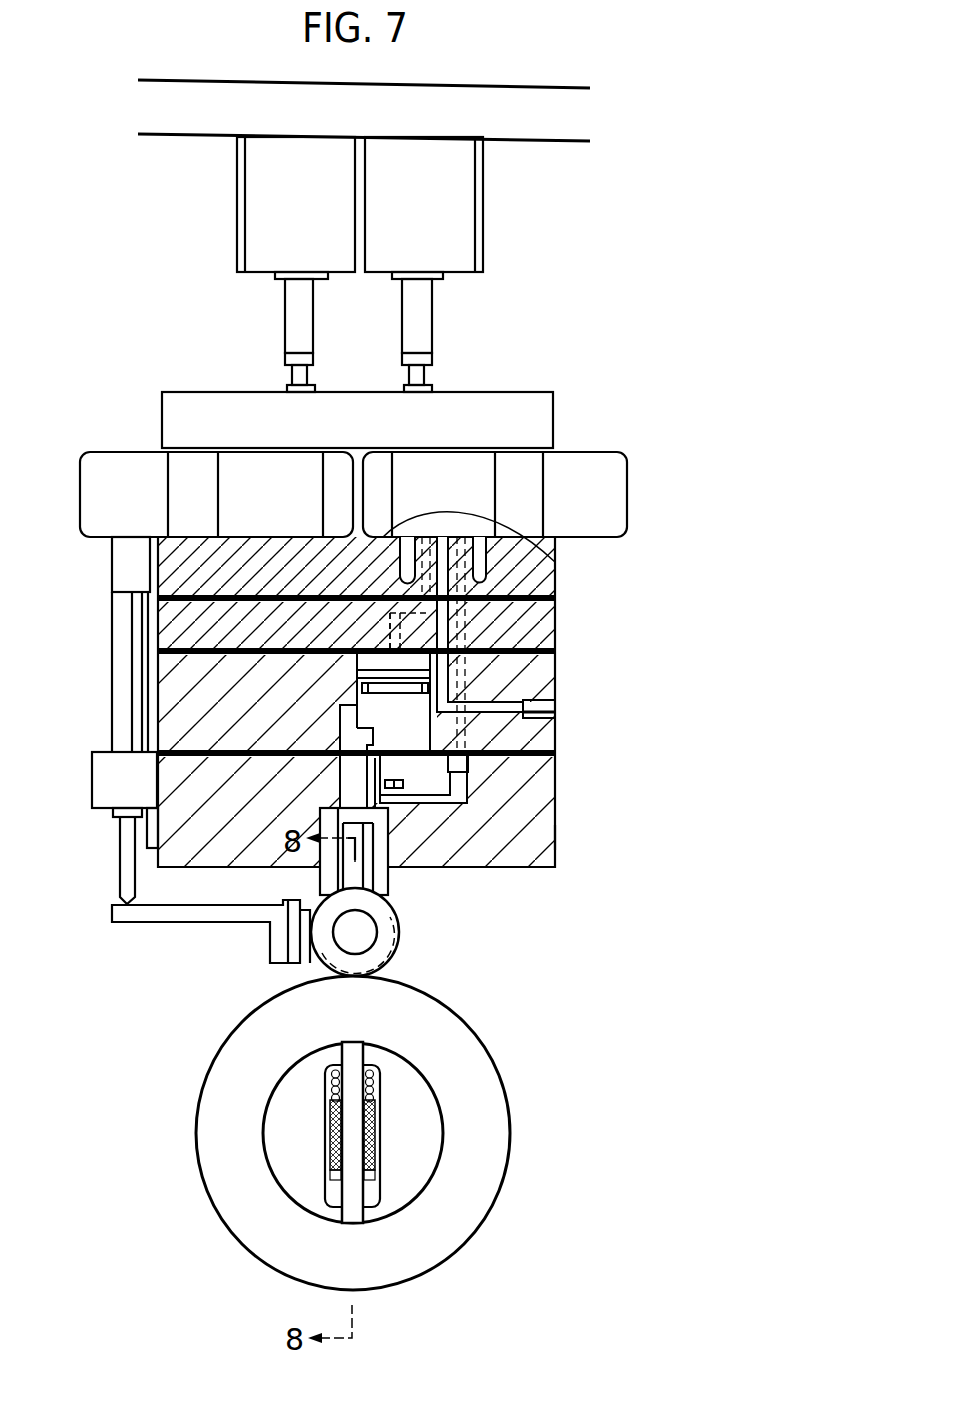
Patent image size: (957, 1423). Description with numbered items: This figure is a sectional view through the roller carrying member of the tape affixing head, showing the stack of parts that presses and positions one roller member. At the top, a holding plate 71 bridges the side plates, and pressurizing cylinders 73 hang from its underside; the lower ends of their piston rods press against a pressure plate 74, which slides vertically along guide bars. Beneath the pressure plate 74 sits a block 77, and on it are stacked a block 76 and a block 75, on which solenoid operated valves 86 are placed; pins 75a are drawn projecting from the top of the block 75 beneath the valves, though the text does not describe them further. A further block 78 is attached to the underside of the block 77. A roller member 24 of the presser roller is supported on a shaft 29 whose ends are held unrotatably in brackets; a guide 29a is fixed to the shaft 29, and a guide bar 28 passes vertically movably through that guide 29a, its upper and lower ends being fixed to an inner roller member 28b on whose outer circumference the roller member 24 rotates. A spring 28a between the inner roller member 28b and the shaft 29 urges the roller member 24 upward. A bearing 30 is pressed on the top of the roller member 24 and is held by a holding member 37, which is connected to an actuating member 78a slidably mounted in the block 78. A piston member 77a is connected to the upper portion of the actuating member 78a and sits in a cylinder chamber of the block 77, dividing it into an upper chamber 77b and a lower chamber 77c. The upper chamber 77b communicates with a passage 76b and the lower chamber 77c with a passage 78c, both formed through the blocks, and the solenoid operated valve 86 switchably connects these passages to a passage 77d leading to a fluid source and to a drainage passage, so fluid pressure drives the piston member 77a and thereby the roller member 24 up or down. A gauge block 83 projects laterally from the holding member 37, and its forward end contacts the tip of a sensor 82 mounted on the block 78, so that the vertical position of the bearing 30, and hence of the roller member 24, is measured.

The holding plate 71 is at (549, 128).
The pressurizing cylinders 73 is at (265, 229).
The pressure plate 74 is at (545, 428).
The solenoid operated valves 86 is at (116, 472).
The sensor 82 is at (128, 697).
The gauge block 83 is at (100, 914).
The block 75 is at (568, 592).
The pin 75a is at (478, 553).
The block 76 is at (570, 638).
The passage 76b is at (396, 607).
The block 77 is at (570, 674).
The piston member 77a is at (345, 674).
The upper chamber 77b is at (380, 624).
The lower chamber 77c is at (393, 801).
The passage 77d is at (495, 712).
The block 78 is at (571, 789).
The actuating member 78a is at (352, 793).
The passage 78c is at (555, 834).
The holding member 37 is at (380, 887).
The bearing 30 is at (415, 932).
The roller members 24 is at (447, 1242).
The guide bar 28 is at (353, 1192).
The spring 28a is at (380, 1067).
The inner roller member 28b is at (422, 1155).
The shaft 29 is at (377, 1113).
The guide 29a is at (377, 1135).